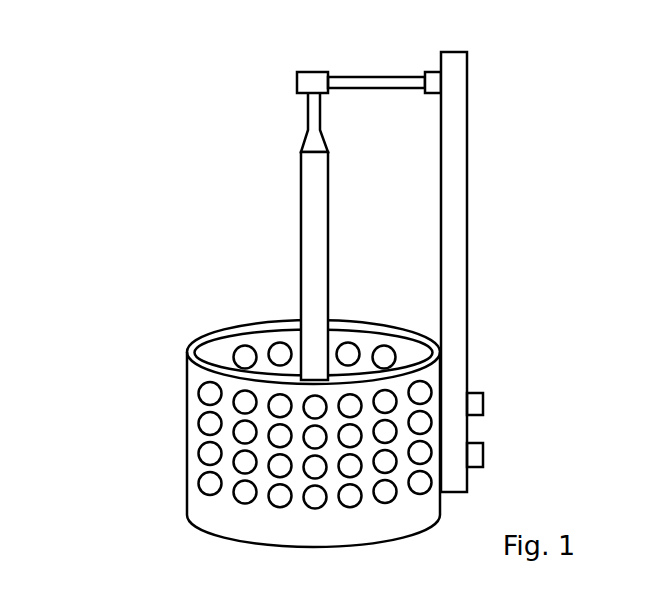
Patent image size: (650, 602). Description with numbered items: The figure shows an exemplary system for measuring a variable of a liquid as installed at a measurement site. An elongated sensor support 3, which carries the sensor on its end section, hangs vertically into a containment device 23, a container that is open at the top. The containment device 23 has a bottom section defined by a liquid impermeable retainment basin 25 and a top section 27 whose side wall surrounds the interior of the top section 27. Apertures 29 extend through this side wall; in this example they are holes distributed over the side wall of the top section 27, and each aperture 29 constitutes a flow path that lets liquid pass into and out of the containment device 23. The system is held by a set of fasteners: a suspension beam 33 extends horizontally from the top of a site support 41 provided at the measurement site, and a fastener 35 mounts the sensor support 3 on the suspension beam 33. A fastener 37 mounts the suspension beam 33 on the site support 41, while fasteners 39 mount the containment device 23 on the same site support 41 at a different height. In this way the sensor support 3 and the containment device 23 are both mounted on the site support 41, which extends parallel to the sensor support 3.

The sensor support 3 is at (315, 250).
The containment device 23 is at (239, 406).
The retainment basin 25 is at (200, 508).
The top section 27 is at (200, 430).
The apertures 29 is at (261, 317).
The suspension beam 33 is at (380, 82).
The fastener 35 is at (310, 82).
The fastener 37 is at (432, 80).
The fasteners 39 is at (482, 402).
The site support 41 is at (458, 233).